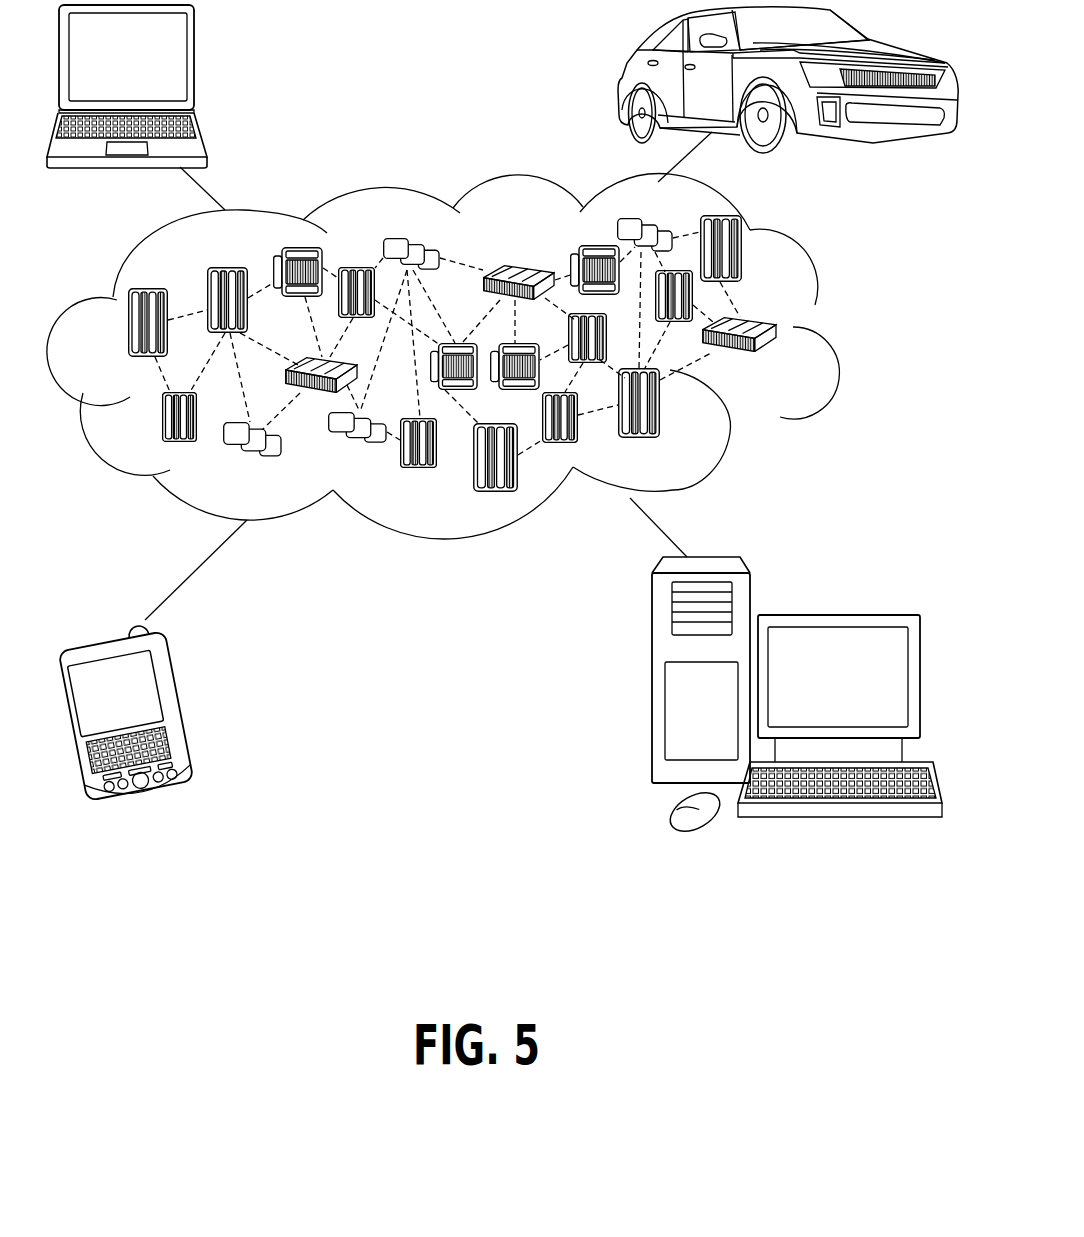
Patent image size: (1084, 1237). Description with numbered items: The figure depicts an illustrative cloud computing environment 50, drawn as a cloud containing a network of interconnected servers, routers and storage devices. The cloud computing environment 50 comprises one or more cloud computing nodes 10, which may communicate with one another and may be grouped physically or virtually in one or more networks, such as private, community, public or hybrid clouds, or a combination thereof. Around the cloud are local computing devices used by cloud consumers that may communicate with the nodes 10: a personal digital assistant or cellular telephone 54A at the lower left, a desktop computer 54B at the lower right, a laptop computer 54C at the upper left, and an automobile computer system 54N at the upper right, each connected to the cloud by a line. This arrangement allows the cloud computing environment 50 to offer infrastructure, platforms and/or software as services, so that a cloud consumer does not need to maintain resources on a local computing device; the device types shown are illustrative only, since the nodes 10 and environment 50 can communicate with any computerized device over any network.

The cloud computing node 10 is at (792, 364).
The cloud computing environment 50 is at (471, 356).
The personal digital assistant or cellular telephone 54A is at (183, 705).
The desktop computer 54B is at (837, 612).
The laptop computer 54C is at (195, 68).
The automobile computer system 54N is at (620, 82).